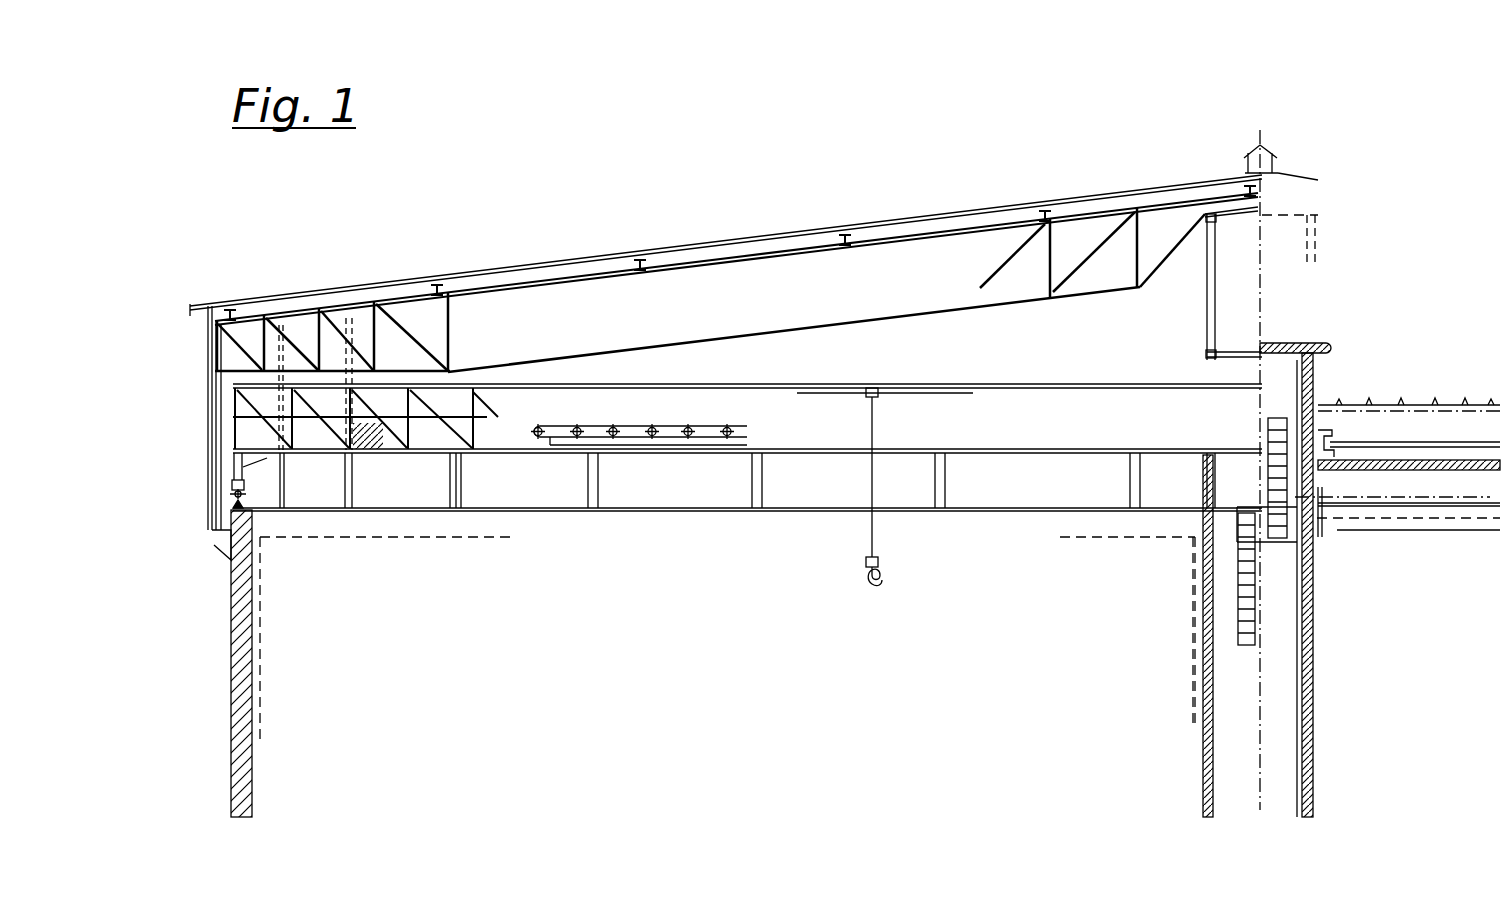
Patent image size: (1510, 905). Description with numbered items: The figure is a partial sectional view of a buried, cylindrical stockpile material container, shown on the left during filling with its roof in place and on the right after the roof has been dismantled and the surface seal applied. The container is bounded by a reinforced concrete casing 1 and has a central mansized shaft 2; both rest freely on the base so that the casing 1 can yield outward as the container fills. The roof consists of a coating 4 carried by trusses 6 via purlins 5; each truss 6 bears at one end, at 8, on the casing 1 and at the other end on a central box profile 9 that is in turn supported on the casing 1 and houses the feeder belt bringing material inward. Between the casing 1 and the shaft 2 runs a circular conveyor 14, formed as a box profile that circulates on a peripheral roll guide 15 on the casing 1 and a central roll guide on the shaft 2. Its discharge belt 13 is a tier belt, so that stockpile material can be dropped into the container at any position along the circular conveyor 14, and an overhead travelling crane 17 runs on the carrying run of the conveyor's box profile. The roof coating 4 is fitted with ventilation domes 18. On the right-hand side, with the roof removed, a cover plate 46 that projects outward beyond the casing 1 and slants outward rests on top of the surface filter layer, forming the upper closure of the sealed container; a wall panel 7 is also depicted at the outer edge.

The reinforced concrete casing 1 is at (242, 686).
The central mansized shaft 2 is at (1205, 620).
The coating 4 is at (520, 270).
The purlins 5 is at (850, 226).
The trusses 6 is at (712, 310).
The wall panel 7 is at (213, 533).
The truss support 8 is at (1203, 220).
The central box profile 9 is at (1208, 313).
The discharge belt 13 is at (639, 420).
The circular conveyor 14 is at (1038, 386).
The peripheral roll guide 15 is at (237, 500).
The overhead crane 17 is at (866, 389).
The ventilation domes 18 is at (1268, 153).
The cover plate 46 is at (1440, 470).